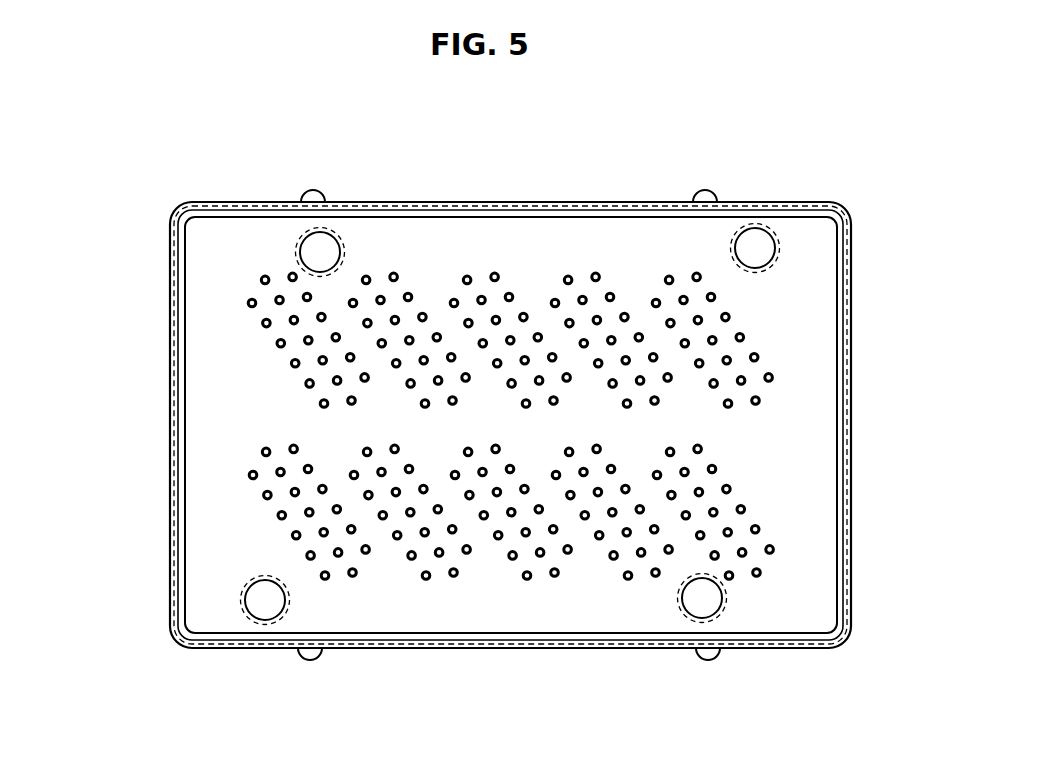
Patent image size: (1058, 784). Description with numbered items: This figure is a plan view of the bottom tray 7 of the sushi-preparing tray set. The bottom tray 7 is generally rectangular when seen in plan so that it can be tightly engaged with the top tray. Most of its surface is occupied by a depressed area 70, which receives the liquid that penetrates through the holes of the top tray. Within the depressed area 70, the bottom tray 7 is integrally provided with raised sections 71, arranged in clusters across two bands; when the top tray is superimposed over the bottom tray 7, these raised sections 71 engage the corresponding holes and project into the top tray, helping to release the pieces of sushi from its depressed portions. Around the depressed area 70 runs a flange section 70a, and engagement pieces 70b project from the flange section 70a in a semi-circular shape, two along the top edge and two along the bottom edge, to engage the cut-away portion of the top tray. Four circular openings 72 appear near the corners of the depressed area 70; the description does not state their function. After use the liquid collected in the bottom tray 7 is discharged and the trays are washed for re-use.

The bottom tray 7 is at (160, 248).
The depressed area 70 is at (207, 545).
The flange section 70a is at (510, 202).
The engagement pieces 70b is at (313, 190).
The raised sections 71 is at (276, 344).
The mounting holes 72 is at (777, 248).